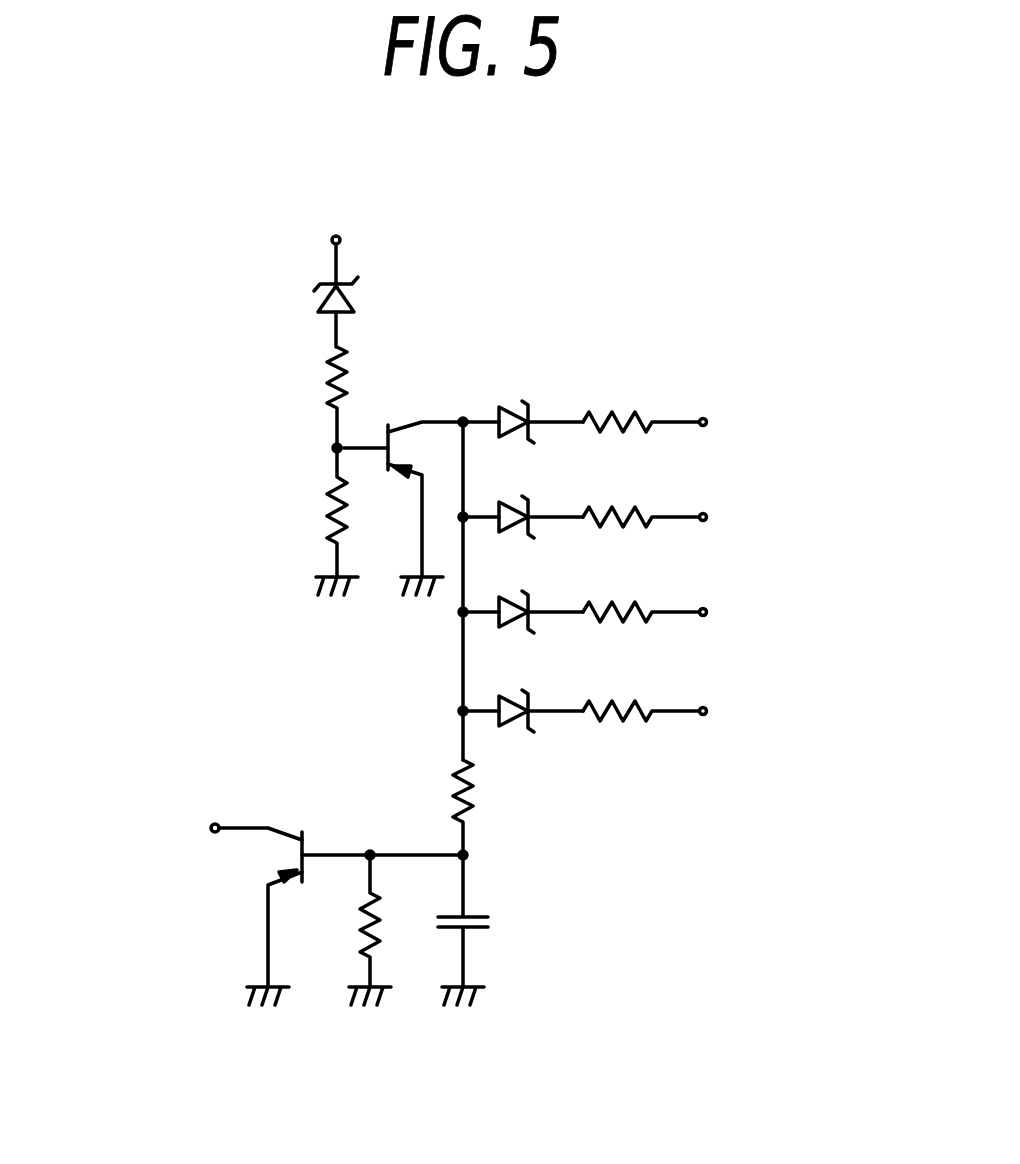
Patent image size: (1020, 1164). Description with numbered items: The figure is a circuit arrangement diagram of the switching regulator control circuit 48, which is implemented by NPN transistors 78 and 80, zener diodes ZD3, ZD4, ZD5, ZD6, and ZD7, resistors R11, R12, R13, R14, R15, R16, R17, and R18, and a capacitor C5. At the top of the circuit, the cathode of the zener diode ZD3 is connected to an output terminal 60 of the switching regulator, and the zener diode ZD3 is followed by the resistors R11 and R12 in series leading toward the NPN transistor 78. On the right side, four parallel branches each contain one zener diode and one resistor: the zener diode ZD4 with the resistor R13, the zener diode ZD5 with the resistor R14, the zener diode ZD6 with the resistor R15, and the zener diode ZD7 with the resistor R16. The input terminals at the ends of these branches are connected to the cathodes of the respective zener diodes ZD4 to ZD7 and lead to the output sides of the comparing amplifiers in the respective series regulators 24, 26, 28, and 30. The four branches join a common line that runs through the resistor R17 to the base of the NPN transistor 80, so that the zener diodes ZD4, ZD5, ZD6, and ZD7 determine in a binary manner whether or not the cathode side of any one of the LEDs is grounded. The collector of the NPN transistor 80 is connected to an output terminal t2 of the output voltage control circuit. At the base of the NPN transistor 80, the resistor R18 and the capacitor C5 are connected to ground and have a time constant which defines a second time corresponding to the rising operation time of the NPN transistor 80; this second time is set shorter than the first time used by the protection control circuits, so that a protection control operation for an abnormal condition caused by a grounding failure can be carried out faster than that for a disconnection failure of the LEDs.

The switching regulator control circuit 48 is at (174, 603).
The NPN transistor 78 is at (394, 420).
The NPN transistor 80 is at (267, 848).
The output terminal 60 is at (338, 235).
The output terminal t2 is at (226, 827).
The series regulator 24 is at (783, 420).
The series regulator 26 is at (783, 515).
The series regulator 28 is at (783, 610).
The series regulator 30 is at (793, 709).
The zener diode ZD3 is at (295, 312).
The zener diode ZD4 is at (523, 399).
The zener diode ZD5 is at (523, 493).
The zener diode ZD6 is at (523, 589).
The zener diode ZD7 is at (523, 688).
The resistor R11 is at (301, 397).
The resistor R12 is at (306, 521).
The resistor R13 is at (641, 399).
The resistor R14 is at (641, 494).
The resistor R15 is at (641, 591).
The resistor R16 is at (641, 689).
The resistor R17 is at (498, 807).
The resistor R18 is at (363, 912).
The capacitor C5 is at (486, 930).